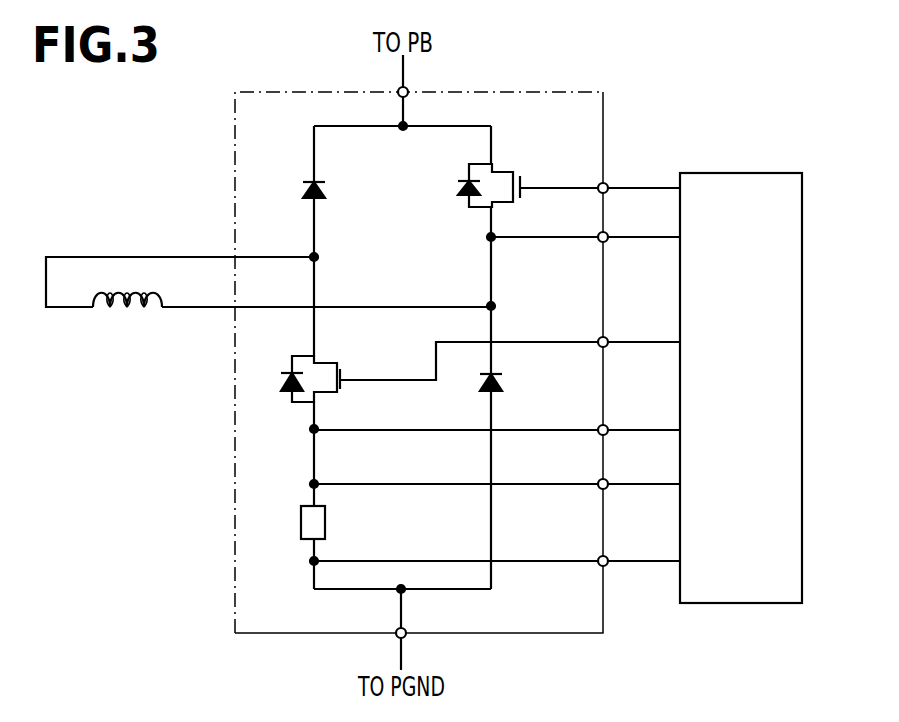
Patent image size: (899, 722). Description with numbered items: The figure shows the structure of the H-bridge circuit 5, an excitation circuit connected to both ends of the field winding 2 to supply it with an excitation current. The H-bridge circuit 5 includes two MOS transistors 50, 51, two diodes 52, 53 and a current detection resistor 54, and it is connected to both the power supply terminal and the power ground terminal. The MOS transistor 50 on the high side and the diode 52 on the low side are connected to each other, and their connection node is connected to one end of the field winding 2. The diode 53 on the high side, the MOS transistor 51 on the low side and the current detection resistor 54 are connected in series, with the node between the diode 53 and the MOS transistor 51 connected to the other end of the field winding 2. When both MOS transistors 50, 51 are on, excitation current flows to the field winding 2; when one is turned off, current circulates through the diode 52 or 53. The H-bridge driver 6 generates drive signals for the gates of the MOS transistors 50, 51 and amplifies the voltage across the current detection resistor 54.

The field winding 2 is at (128, 313).
The H-bridge circuit 5 is at (596, 92).
The H-bridge driver 6 is at (730, 173).
The MOS transistor 50 is at (462, 178).
The MOS transistor 51 is at (293, 407).
The diode 52 is at (498, 380).
The diode 53 is at (310, 180).
The current detection resistor 54 is at (307, 542).